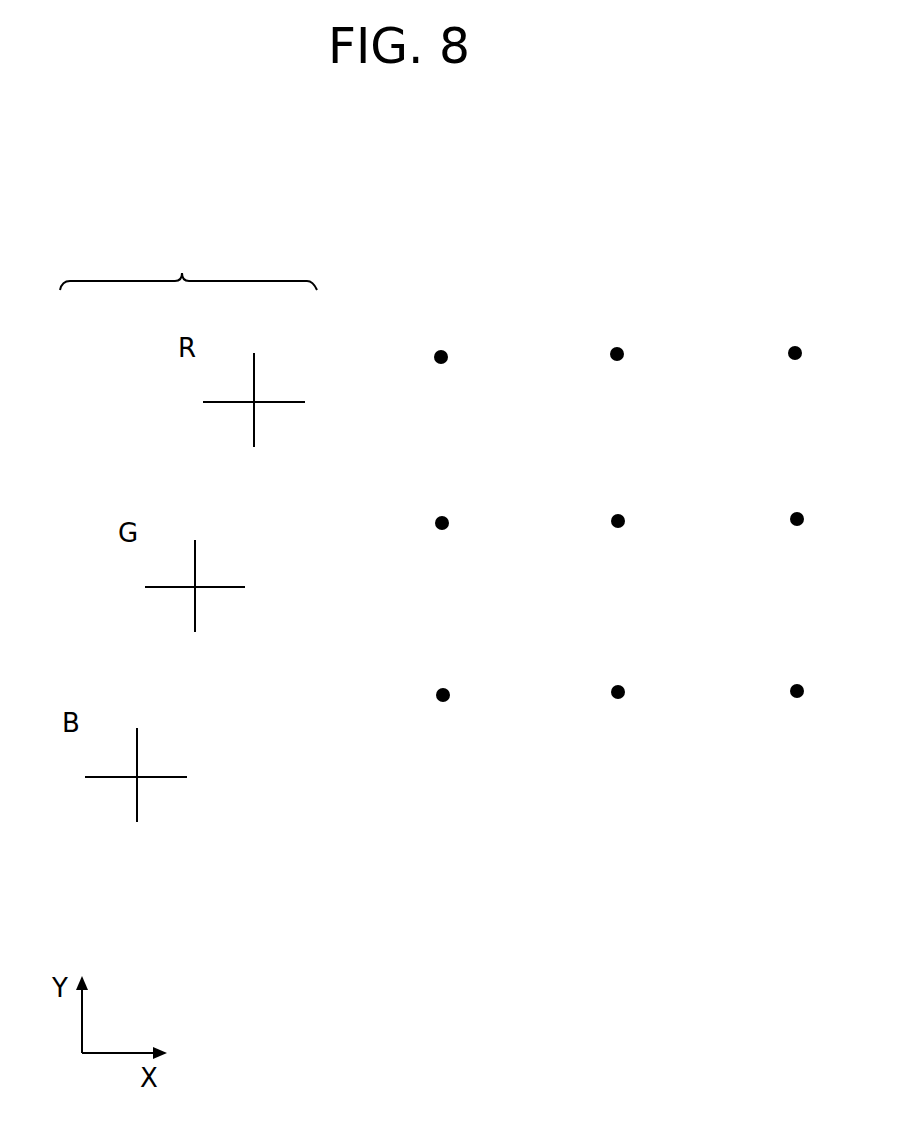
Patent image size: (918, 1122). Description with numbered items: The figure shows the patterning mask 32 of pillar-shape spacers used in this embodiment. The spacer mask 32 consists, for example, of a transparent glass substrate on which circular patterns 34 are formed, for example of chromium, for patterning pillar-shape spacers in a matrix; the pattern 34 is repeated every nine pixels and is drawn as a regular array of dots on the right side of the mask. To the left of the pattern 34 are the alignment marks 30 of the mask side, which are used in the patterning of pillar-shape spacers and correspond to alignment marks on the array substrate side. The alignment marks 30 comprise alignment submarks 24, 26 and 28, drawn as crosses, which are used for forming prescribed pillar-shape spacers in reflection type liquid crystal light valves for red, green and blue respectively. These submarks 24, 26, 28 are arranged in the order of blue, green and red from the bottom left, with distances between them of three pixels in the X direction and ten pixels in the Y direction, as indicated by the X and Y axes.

The alignment submark 24 is at (273, 422).
The alignment submark 26 is at (213, 608).
The alignment submark 28 is at (157, 797).
The alignment marks of the mask side 30 is at (188, 264).
The patterning mask 32 is at (615, 808).
The circular pattern 34 is at (446, 698).